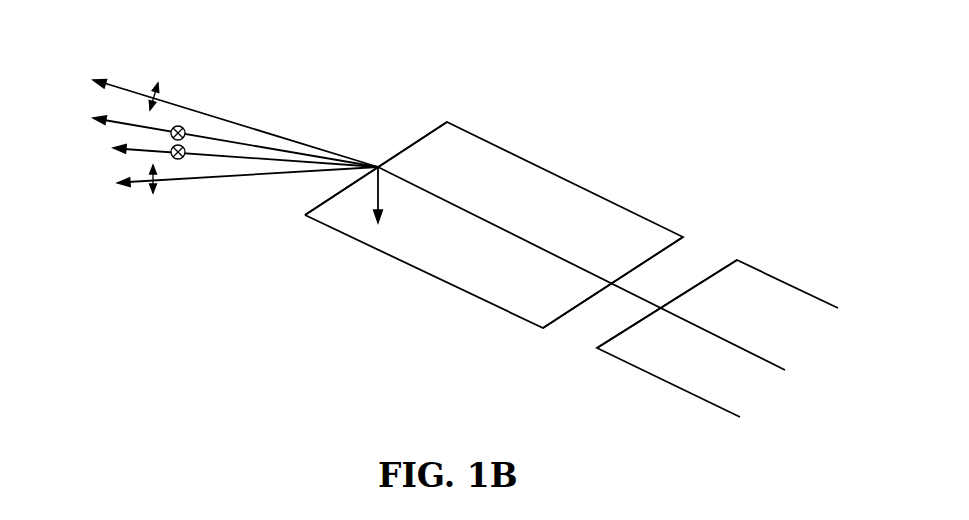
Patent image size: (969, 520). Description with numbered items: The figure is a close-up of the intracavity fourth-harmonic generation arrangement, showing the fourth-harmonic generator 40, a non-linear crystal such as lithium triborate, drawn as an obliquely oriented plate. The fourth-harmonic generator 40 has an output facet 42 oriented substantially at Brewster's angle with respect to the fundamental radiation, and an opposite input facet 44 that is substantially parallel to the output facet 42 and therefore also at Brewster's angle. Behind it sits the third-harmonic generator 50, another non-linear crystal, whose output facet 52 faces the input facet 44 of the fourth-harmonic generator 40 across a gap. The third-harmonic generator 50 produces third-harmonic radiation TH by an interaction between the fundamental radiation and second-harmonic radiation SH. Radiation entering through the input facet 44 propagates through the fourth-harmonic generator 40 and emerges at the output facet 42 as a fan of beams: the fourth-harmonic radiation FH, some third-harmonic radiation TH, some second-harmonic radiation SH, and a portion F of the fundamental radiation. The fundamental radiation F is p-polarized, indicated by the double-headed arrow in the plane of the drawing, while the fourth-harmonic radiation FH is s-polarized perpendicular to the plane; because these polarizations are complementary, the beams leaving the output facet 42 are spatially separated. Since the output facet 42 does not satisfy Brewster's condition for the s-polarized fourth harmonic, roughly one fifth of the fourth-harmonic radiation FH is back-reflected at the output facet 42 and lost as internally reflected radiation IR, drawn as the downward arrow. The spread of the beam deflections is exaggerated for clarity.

The fourth-harmonic generator (FHG) 40 is at (562, 177).
The output facet 42 is at (402, 150).
The input facet 44 is at (570, 313).
The third-harmonic generator (THG) 50 is at (657, 380).
The output facet of THG 52 is at (700, 280).
The internally reflected radiation IR is at (372, 188).
The fundamental radiation F is at (235, 103).
The second-harmonic radiation SH is at (215, 135).
The fourth-harmonic radiation FH is at (225, 153).
The third-harmonic radiation TH is at (224, 190).